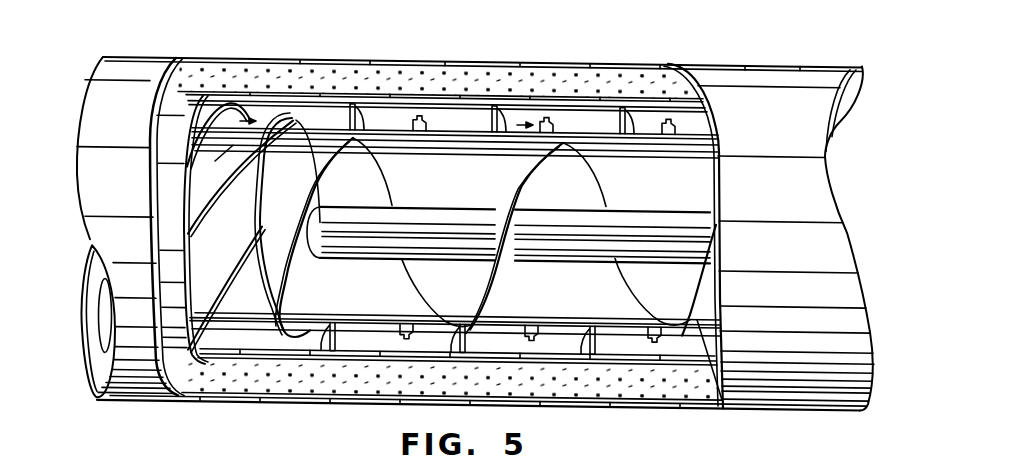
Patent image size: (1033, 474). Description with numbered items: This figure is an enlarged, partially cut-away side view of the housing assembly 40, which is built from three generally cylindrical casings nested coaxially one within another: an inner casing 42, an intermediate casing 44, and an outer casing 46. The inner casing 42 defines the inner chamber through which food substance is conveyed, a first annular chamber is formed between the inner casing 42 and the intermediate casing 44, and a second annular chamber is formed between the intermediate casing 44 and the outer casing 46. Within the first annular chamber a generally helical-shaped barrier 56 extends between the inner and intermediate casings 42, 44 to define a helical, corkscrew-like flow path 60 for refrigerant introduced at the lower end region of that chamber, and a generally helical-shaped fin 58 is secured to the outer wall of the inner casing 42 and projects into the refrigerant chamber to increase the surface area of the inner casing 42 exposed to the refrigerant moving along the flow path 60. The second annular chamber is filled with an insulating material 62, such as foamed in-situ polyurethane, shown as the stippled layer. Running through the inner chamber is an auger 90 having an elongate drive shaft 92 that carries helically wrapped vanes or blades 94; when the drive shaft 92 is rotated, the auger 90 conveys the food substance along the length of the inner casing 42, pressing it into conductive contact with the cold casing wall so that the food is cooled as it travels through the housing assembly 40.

The housing assembly 40 is at (720, 63).
The inner casing 42 is at (516, 329).
The intermediate casing 44 is at (372, 326).
The outer casing 46 is at (272, 401).
The helical-shaped barrier 56 is at (349, 108).
The helical-shaped fin 58 is at (427, 128).
The flow path 60 is at (242, 108).
The insulating material 62 is at (517, 80).
The auger 90 is at (680, 211).
The drive shaft 92 is at (622, 210).
The helically wrapped vanes or blades 94 is at (583, 175).